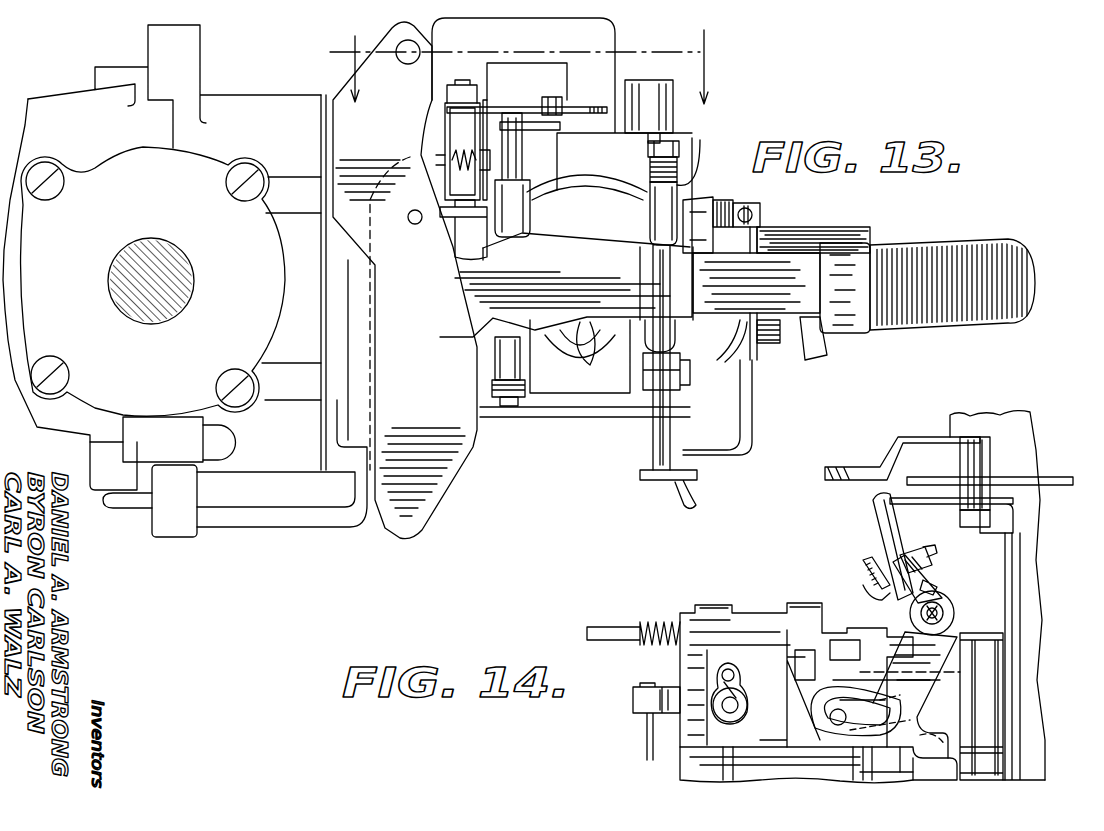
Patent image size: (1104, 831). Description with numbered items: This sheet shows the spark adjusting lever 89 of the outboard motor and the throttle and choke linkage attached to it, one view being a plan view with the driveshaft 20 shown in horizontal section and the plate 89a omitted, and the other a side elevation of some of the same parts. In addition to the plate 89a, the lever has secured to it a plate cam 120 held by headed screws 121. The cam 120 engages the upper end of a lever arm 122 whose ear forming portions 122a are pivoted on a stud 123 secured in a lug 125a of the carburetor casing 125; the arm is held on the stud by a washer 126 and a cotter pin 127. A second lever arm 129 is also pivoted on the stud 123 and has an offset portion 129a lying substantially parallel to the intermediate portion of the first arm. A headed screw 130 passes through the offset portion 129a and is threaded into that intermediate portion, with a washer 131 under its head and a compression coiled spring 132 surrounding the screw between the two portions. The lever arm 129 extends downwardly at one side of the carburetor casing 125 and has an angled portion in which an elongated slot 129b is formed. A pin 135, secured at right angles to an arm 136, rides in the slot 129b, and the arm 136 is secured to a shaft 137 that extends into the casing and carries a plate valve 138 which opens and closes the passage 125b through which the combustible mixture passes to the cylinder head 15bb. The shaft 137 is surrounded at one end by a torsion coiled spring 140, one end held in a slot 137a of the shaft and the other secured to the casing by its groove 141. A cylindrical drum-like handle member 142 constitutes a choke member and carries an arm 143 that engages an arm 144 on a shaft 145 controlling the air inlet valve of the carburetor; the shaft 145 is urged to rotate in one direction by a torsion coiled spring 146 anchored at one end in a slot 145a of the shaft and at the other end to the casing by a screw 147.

In FIG. 13, the driveshaft 20 is at (186, 267).
In FIG. 13, the spark adjusting lever 89 is at (558, 262).
In FIG. 14, the plate 89a is at (1005, 482).
In FIG. 13, the plate cam 120 is at (457, 462).
In FIG. 14, the plate cam 120 is at (960, 513).
In FIG. 14, the headed screws 121 is at (962, 520).
In FIG. 13, the lever arm 122 is at (452, 124).
In FIG. 14, the lever arm 122 is at (878, 512).
In FIG. 13, the ear forming portions 122a is at (470, 103).
In FIG. 14, the stud 123 is at (943, 612).
In FIG. 14, the carburetor casing 125 is at (760, 615).
In FIG. 14, the lug 125a is at (945, 618).
In FIG. 14, the passage 125b is at (942, 745).
In FIG. 14, the washer 126 is at (940, 602).
In FIG. 14, the cotter pin 127 is at (1000, 620).
In FIG. 14, the lever arm 129 is at (918, 645).
In FIG. 14, the offset portion 129a is at (868, 560).
In FIG. 14, the elongated slot 129b is at (922, 740).
In FIG. 14, the headed screw 130 is at (870, 576).
In FIG. 14, the washer 131 is at (880, 592).
In FIG. 14, the compression coiled spring 132 is at (903, 552).
In FIG. 13, the pin 135 is at (556, 100).
In FIG. 13, the arm 136 is at (540, 127).
In FIG. 13, the shaft 137 is at (518, 150).
In FIG. 14, the shaft 137 is at (830, 700).
In FIG. 13, the slot 137a is at (507, 407).
In FIG. 14, the plate valve 138 is at (795, 680).
In FIG. 13, the torsion coiled spring 140 is at (522, 393).
In FIG. 13, the groove 141 is at (516, 365).
In FIG. 13, the cylindrical drum-like handle member 142 is at (828, 338).
In FIG. 13, the arm 143 is at (754, 408).
In FIG. 13, the arm 144 is at (693, 476).
In FIG. 13, the shaft 145 is at (660, 437).
In FIG. 13, the slot 145a is at (668, 128).
In FIG. 13, the torsion coiled spring 146 is at (676, 146).
In FIG. 13, the screw 147 is at (678, 165).
In FIG. 14, the cylinder head 15bb is at (1022, 642).